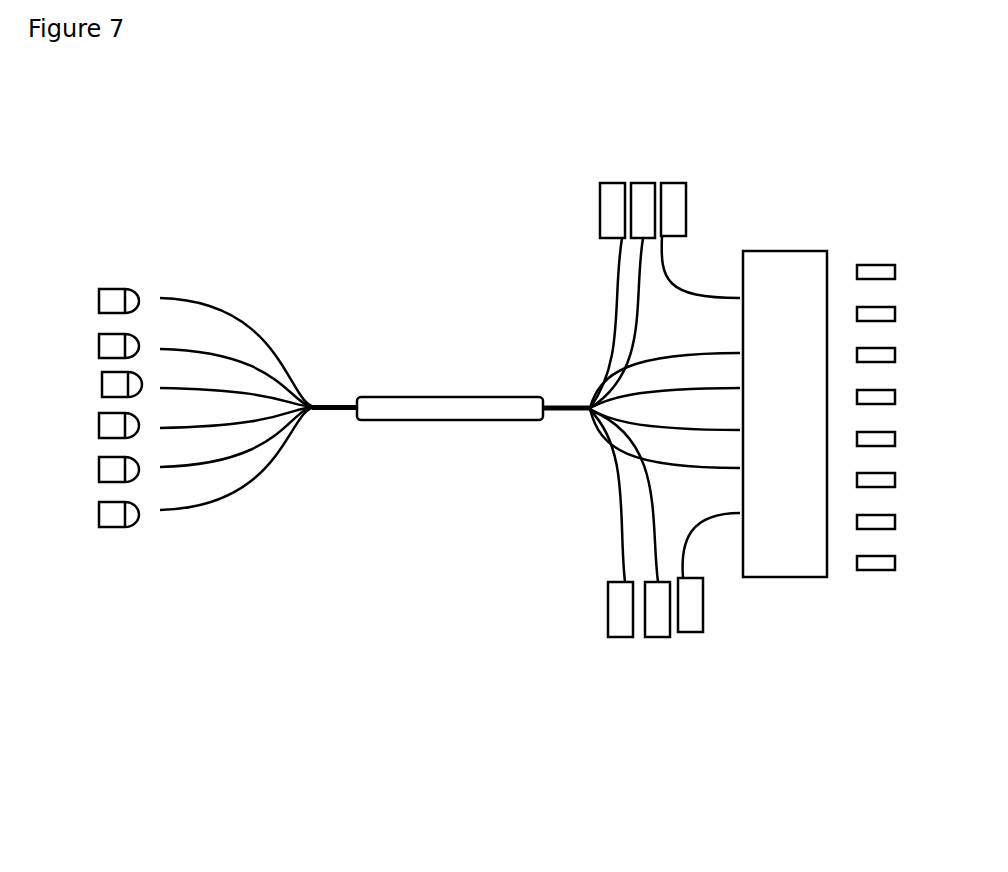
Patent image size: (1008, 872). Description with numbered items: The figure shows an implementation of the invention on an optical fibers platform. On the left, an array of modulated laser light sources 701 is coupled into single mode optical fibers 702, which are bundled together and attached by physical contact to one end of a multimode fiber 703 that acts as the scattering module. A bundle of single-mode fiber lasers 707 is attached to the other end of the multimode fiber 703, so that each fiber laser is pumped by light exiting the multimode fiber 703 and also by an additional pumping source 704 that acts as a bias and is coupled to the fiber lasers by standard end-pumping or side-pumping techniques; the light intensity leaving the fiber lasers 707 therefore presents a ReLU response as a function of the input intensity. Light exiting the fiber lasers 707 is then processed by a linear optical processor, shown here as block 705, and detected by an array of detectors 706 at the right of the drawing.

The modulated laser light sources 701 is at (117, 667).
The single mode optical fibers 702 is at (197, 687).
The multimode fiber 703 is at (432, 453).
The additional pumping source 704 is at (618, 650).
The detector block 705 is at (781, 720).
The detectors 706 is at (870, 727).
The single-mode fiber lasers 707 is at (578, 358).